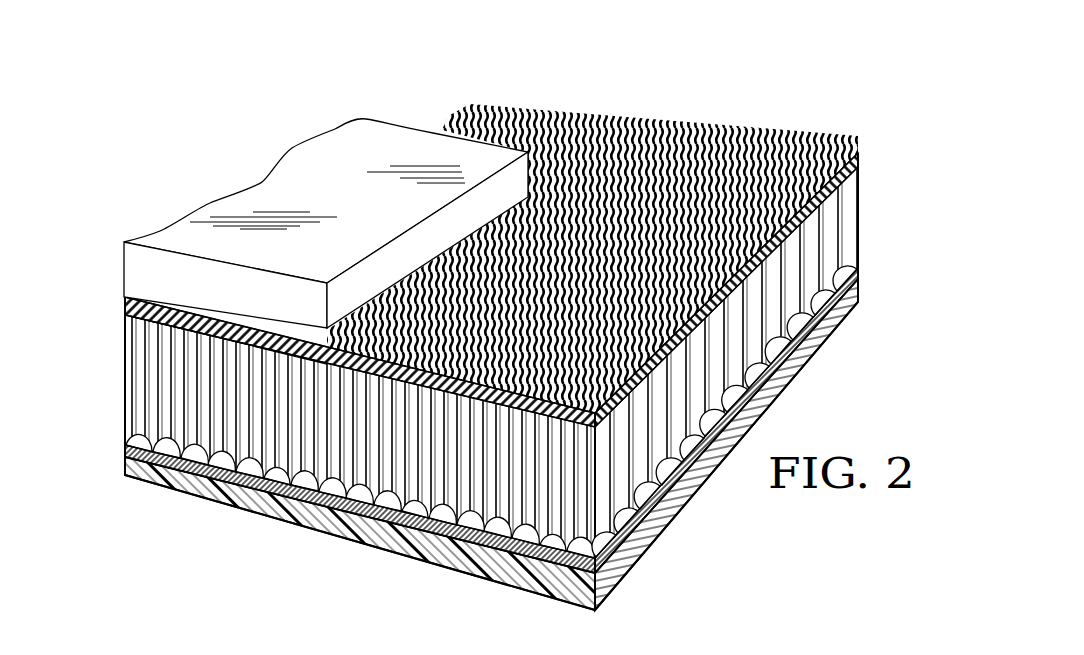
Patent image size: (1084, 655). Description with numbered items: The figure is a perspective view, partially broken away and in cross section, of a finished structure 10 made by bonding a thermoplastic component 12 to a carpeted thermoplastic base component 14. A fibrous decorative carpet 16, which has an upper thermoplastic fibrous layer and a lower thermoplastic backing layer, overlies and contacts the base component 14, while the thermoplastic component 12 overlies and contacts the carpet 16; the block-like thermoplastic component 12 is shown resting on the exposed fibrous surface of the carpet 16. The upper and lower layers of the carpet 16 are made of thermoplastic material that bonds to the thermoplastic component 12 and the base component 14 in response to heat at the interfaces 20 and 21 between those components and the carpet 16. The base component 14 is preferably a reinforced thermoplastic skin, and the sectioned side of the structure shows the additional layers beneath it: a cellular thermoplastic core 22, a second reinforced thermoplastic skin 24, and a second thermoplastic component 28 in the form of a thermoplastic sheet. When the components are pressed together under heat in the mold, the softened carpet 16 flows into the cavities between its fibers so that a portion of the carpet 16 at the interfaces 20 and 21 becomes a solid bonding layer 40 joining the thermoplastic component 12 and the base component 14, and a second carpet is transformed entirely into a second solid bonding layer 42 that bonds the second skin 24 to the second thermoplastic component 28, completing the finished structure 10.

The finished structure 10 is at (776, 70).
The thermoplastic component 12 is at (394, 119).
The base component 14 is at (865, 166).
The fibrous decorative carpet 16 is at (606, 109).
The interface 20 is at (127, 307).
The interface 21 is at (167, 323).
The cellular thermoplastic core 22 is at (862, 220).
The second reinforced thermoplastic skin 24 is at (862, 263).
The second thermoplastic component 28 is at (862, 289).
The solid bonding layer 40 is at (213, 323).
The second solid bonding layer 42 is at (862, 270).